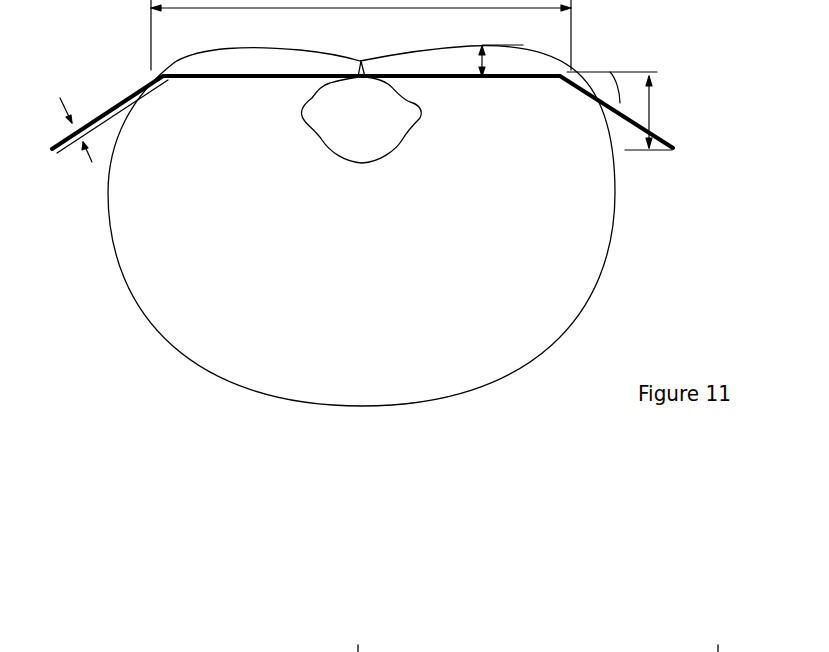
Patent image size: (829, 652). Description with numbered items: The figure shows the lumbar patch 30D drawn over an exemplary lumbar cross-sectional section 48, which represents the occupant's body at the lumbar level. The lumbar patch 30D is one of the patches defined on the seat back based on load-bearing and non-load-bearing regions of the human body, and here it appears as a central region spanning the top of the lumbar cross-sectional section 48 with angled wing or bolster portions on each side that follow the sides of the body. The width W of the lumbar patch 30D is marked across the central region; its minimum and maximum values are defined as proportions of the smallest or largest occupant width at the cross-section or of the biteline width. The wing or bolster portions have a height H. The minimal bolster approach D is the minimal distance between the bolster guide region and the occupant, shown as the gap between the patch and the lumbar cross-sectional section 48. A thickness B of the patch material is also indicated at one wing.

The lumbar cross-sectional section 48 is at (613, 190).
The lumbar patch 30D is at (128, 97).
The band thickness dimension B is at (62, 130).
The width W is at (361, 35).
The minimal bolster approach D is at (510, 53).
The wing/bolster height H is at (648, 113).